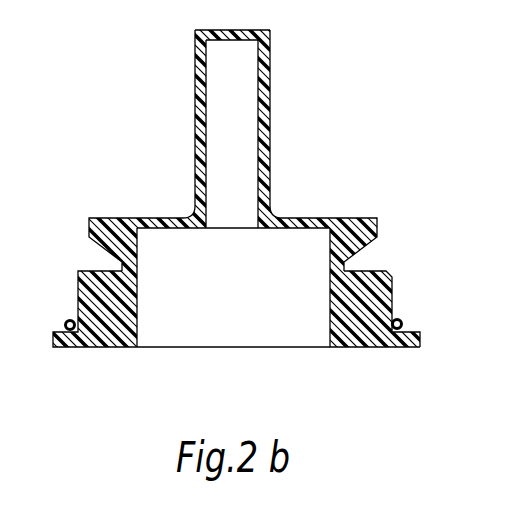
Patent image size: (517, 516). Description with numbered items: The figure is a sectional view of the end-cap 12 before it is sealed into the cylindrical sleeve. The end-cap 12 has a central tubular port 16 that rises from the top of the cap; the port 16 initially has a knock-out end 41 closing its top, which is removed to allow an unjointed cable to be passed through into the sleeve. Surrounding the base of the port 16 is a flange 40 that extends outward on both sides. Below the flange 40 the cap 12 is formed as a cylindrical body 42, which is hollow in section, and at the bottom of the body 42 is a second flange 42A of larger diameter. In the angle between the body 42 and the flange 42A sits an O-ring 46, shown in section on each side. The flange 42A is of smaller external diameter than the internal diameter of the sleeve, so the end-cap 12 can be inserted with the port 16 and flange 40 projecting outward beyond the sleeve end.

The end-cap 12 is at (404, 284).
The port 16 is at (245, 135).
The flange 40 is at (100, 236).
The knock-out end 41 is at (222, 38).
The cylindrical body 42 is at (114, 322).
The flange 42A is at (400, 335).
The O-ring 46 is at (67, 319).